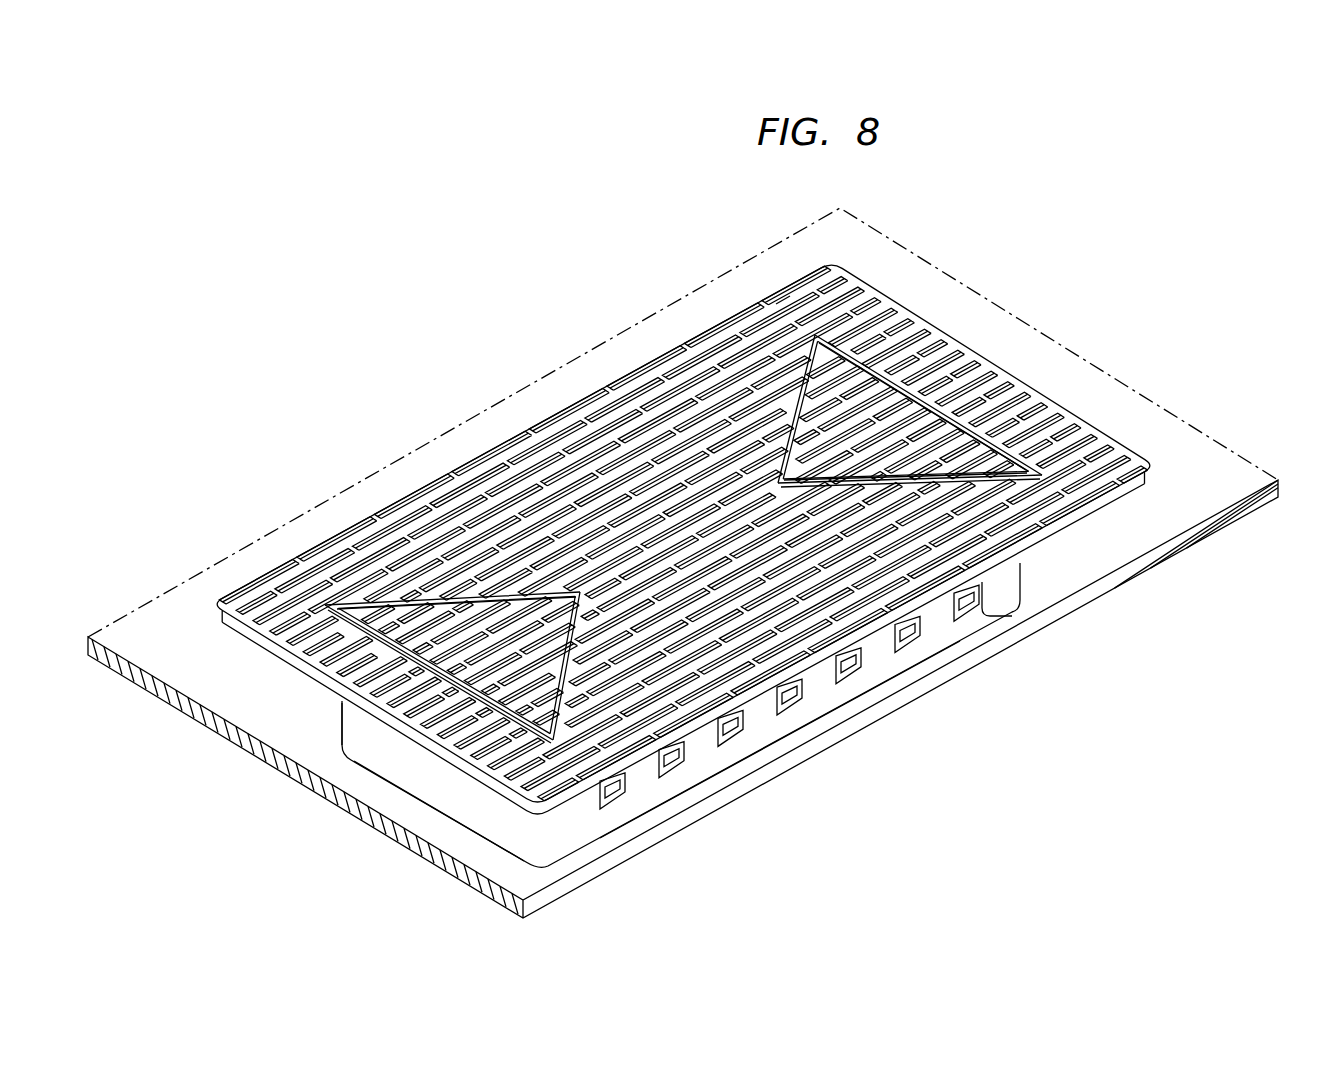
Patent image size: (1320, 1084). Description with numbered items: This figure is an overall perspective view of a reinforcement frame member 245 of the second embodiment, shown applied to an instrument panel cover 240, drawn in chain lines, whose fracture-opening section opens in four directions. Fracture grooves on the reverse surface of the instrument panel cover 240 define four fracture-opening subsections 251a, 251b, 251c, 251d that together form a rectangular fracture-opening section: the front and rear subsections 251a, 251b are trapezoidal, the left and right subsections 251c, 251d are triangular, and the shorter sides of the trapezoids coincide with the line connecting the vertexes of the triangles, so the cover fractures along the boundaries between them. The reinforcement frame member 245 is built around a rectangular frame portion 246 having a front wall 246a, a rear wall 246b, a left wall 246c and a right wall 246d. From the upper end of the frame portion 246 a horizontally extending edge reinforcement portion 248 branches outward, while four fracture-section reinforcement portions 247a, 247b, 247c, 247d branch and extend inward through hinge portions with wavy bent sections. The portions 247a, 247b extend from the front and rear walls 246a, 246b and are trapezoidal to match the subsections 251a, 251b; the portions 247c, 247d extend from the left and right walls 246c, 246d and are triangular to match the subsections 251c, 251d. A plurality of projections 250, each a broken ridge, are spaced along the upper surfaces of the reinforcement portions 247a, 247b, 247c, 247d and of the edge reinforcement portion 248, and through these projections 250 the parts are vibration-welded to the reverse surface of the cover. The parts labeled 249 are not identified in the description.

The instrument panel cover 240 is at (722, 290).
The reinforcement frame member 245 is at (684, 829).
The rectangular frame portion 246 is at (686, 734).
The front wall 246a is at (342, 734).
The rear wall 246b is at (940, 630).
The left wall 246c is at (462, 808).
The right wall 246d is at (1020, 582).
The fracture-section reinforcement portion 247a is at (658, 494).
The fracture-section reinforcement portion 247b is at (805, 595).
The fracture-section reinforcement portion 247c is at (518, 690).
The fracture-section reinforcement portion 247d is at (968, 458).
The edge reinforcement portion 248 is at (786, 300).
The slots 249 is at (562, 519).
The projections 250 is at (932, 324).
The fracture-opening subsection 251a is at (431, 556).
The fracture-opening subsection 251b is at (925, 527).
The fracture-opening subsection 251c is at (383, 717).
The fracture-opening subsection 251d is at (858, 362).